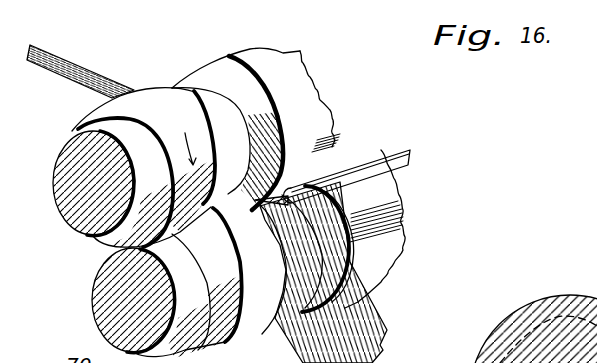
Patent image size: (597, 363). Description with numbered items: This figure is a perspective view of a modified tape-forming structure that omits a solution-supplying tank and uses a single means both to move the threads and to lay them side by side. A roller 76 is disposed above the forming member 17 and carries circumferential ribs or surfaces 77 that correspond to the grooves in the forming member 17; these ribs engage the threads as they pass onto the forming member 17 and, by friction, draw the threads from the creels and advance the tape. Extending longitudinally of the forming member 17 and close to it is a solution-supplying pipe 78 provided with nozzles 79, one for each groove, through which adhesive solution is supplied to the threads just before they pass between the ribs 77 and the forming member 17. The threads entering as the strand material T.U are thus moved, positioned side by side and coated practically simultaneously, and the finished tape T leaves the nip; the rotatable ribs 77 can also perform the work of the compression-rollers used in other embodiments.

The roller 76 is at (151, 139).
The circumferential ribs or surfaces 77 is at (252, 62).
The solution-supplying pipe 78 is at (378, 160).
The nozzles 79 is at (281, 168).
The forming member 17 is at (383, 224).
The tape T is at (382, 332).
The tape strip T.U is at (128, 66).